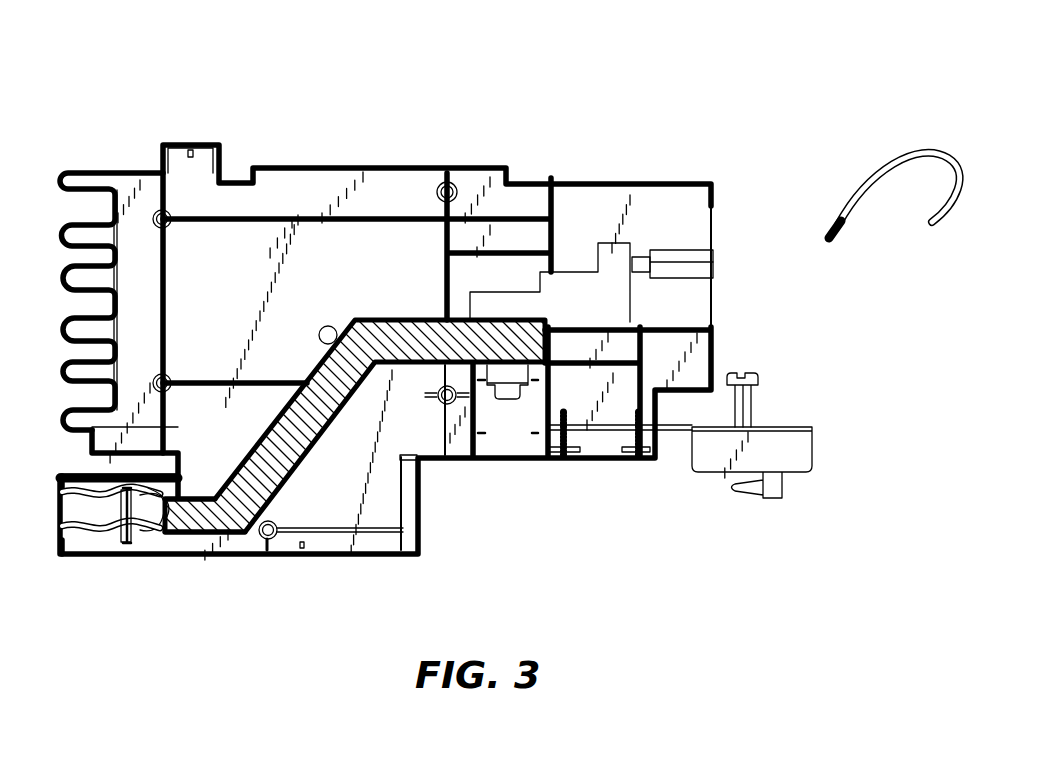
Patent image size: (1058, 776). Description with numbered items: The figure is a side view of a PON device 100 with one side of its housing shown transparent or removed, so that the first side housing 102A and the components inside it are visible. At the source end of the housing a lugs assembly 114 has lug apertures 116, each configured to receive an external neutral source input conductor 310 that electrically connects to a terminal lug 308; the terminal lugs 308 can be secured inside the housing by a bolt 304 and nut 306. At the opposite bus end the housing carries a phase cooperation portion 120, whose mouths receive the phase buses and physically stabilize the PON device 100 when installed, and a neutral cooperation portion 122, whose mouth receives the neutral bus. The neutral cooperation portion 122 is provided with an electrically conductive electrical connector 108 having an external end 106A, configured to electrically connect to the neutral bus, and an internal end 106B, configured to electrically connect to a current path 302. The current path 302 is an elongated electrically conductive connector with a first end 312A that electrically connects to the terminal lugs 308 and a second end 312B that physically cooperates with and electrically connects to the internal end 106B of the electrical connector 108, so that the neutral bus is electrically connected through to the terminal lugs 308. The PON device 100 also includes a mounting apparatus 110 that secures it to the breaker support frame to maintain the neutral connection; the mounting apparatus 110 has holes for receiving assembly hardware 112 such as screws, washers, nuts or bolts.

The PON device 100 is at (540, 55).
The first side housing 102A is at (597, 197).
The external end 106A is at (78, 548).
The internal end 106B is at (136, 548).
The electrical connector 108 is at (96, 500).
The mounting apparatus 110 is at (805, 400).
The assembly hardware 112 is at (752, 400).
The lugs assembly 114 is at (725, 260).
The lug aperture 116 is at (700, 265).
The phase cooperation portion 120 is at (84, 158).
The neutral cooperation portion 122 is at (57, 445).
The current path 302 is at (347, 385).
The bolt 304 is at (510, 392).
The nut 306 is at (525, 373).
The terminal lug 308 is at (642, 243).
The neutral source input conductor 310 is at (883, 178).
The first end 312A is at (525, 333).
The second end 312B is at (175, 527).